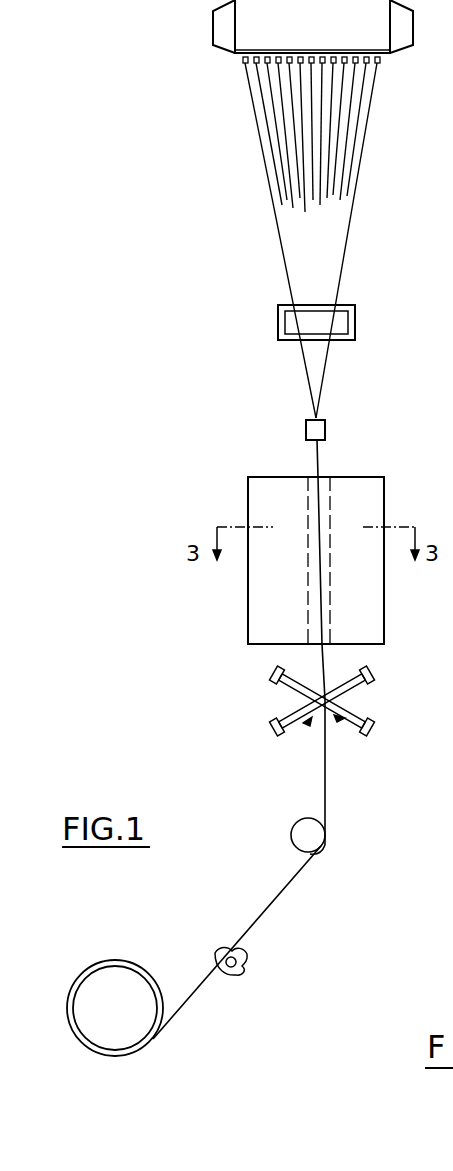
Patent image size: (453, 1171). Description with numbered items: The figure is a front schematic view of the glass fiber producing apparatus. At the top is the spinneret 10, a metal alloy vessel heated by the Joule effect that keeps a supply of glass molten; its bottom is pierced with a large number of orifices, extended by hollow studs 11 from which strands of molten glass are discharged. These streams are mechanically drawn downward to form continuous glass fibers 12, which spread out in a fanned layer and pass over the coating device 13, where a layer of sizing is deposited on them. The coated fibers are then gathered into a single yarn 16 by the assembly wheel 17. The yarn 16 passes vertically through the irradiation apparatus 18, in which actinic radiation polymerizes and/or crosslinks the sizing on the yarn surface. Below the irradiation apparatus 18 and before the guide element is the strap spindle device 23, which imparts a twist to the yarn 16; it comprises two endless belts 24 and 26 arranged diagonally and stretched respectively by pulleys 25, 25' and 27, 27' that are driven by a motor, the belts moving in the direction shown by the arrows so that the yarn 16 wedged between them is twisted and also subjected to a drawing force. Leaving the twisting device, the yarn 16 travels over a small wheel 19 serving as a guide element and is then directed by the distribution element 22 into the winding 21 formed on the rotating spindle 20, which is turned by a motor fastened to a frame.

The spinneret 10 is at (213, 20).
The hollow studs 11 is at (245, 63).
The continuous glass fibers 12 is at (357, 205).
The coating device 13 is at (356, 325).
The yarn 16 is at (318, 462).
The assembly wheel 17 is at (306, 428).
The irradiation apparatus 18 is at (248, 600).
The small wheel 19 is at (316, 838).
The rotating spindle 20 is at (124, 1035).
The winding 21 is at (66, 1005).
The distribution element 22 is at (248, 958).
The strap spindle device 23 is at (329, 719).
The endless belt 24 is at (300, 710).
The pulley 25 is at (260, 745).
The pulley 25' is at (399, 665).
The endless belt 26 is at (309, 690).
The pulley 27 is at (248, 671).
The pulley 27' is at (403, 715).